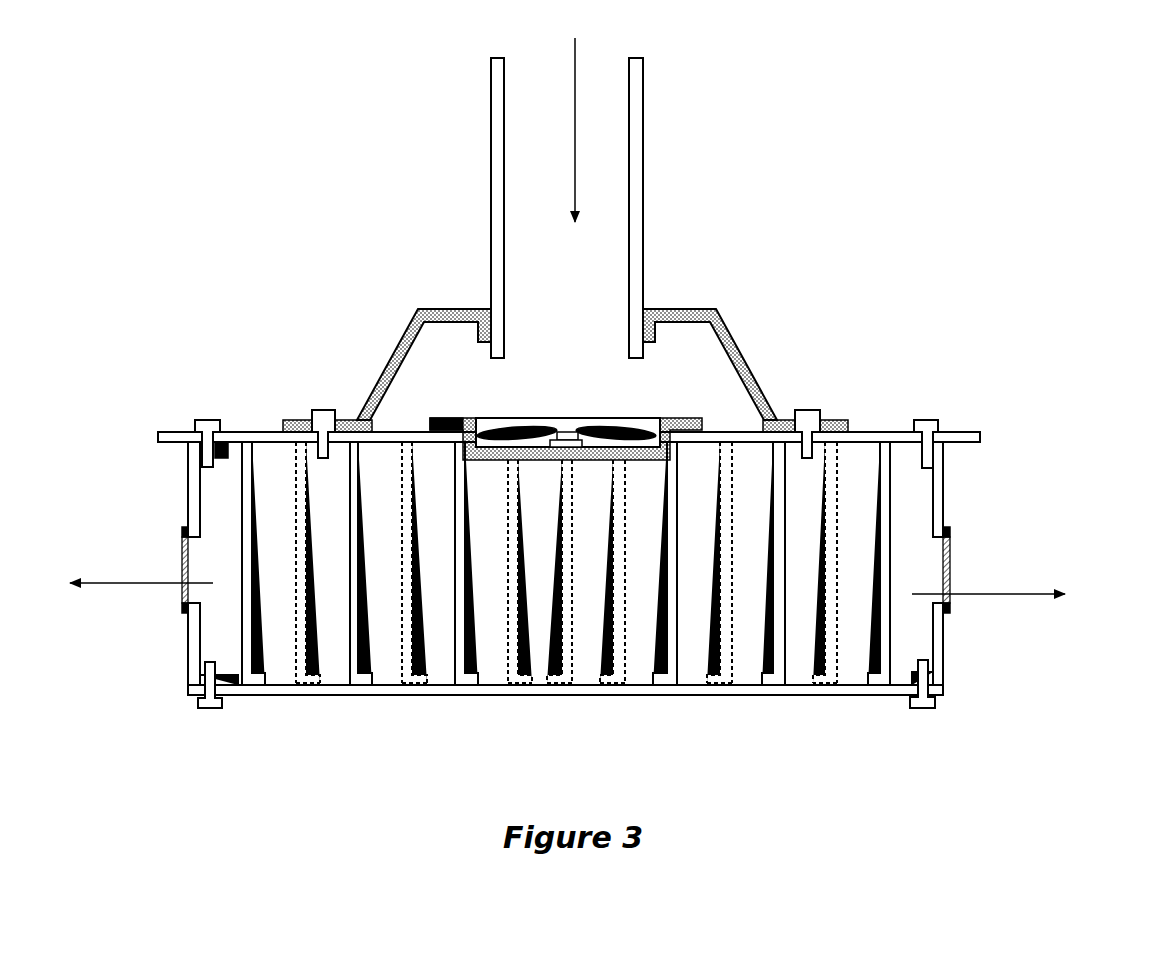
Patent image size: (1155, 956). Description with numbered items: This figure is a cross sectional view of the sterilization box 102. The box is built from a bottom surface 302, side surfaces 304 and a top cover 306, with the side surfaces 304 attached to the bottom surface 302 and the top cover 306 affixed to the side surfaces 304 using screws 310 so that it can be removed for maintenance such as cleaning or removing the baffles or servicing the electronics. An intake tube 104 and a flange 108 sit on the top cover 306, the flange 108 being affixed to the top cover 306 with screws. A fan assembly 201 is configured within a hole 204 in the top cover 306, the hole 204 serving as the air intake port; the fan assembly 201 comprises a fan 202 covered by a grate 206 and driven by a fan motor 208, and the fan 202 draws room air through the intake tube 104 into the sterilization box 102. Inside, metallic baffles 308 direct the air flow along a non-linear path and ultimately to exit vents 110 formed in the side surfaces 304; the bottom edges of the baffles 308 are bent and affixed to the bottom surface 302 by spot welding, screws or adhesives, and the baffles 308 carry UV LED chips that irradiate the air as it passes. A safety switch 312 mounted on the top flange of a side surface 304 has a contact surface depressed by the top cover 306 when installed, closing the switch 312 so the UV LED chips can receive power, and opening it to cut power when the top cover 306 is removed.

The sterilization box 102 is at (1015, 312).
The intake tube 104 is at (497, 100).
The flange 108 is at (713, 318).
The exit vents 110 is at (945, 550).
The fan assembly 201 is at (655, 403).
The fan 202 is at (530, 437).
The hole 204 is at (447, 437).
The grate 206 is at (615, 420).
The fan motor 208 is at (580, 437).
The bottom surface 302 is at (638, 697).
The side surfaces 304 is at (940, 498).
The top cover 306 is at (265, 432).
The baffles 308 is at (362, 638).
The screws 310 is at (922, 423).
The safety switch 312 is at (228, 462).